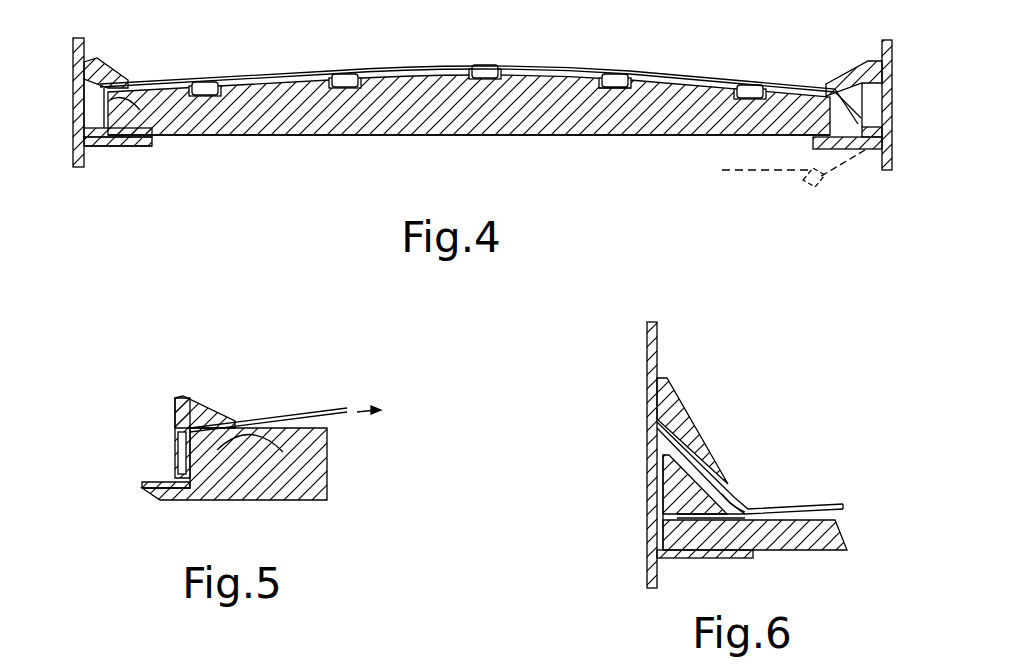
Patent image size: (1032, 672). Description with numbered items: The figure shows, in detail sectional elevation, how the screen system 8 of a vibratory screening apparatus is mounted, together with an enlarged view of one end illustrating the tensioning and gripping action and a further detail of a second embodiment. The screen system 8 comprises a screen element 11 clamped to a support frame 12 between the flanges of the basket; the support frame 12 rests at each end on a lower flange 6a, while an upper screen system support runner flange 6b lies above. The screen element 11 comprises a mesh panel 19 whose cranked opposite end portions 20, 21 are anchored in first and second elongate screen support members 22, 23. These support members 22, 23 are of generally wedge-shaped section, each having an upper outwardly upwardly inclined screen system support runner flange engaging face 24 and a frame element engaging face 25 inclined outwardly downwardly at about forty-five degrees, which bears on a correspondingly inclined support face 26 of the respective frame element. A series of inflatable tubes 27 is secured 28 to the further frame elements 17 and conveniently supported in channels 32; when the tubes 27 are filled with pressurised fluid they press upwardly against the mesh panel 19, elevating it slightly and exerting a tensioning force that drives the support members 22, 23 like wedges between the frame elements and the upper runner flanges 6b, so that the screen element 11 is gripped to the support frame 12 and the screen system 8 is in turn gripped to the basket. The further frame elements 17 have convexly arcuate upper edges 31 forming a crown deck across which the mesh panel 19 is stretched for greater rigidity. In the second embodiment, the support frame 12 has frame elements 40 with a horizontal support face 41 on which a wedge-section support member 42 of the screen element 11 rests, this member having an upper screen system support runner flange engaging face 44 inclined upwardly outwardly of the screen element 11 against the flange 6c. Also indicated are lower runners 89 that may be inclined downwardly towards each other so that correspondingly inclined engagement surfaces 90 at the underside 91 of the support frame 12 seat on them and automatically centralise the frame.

In FIG. 4, the lower flange 6a is at (147, 137).
In FIG. 6, the lower flange 6a is at (690, 558).
In FIG. 4, the upper screen system support runner flange 6b is at (118, 80).
In FIG. 6, the frame wedge portion 6c is at (669, 428).
In FIG. 6, the screen system 8 is at (842, 496).
In FIG. 4, the screen element 11 is at (666, 64).
In FIG. 6, the screen element 11 is at (808, 493).
In FIG. 4, the support frame 12 is at (369, 122).
In FIG. 4, the third frame element 17 is at (503, 120).
In FIG. 5, the third frame element 17 is at (283, 496).
In FIG. 4, the mesh panel 19 is at (366, 71).
In FIG. 4, the cranked end portion 20 is at (104, 100).
In FIG. 5, the cranked end portion 20 is at (182, 442).
In FIG. 4, the cranked end portion 21 is at (870, 93).
In FIG. 4, the first elongate screen support member 22 is at (104, 116).
In FIG. 5, the first elongate screen support member 22 is at (182, 456).
In FIG. 4, the second elongate screen support member 23 is at (866, 150).
In FIG. 4, the screen system support runner flange engaging face 24 is at (113, 83).
In FIG. 5, the screen system support runner flange engaging face 24 is at (195, 398).
In FIG. 4, the frame element engaging face 25 is at (126, 90).
In FIG. 5, the frame element engaging face 25 is at (278, 452).
In FIG. 4, the support face 26 is at (108, 100).
In FIG. 5, the support face 26 is at (148, 483).
In FIG. 4, the inflatable tube 27 is at (489, 73).
In FIG. 4, the securing 28 is at (620, 91).
In FIG. 4, the convexly arcuate upper edge 31 is at (461, 71).
In FIG. 4, the channel 32 is at (636, 82).
In FIG. 6, the frame element 40 is at (753, 541).
In FIG. 6, the horizontal support face 41 is at (734, 513).
In FIG. 6, the wedge-section support member 42 is at (676, 492).
In FIG. 6, the upper screen system support runner flange engaging face 44 is at (729, 493).
In FIG. 4, the lower runner 89 is at (838, 165).
In FIG. 4, the inclined engagement surface 90 is at (821, 188).
In FIG. 4, the underside 91 is at (749, 173).